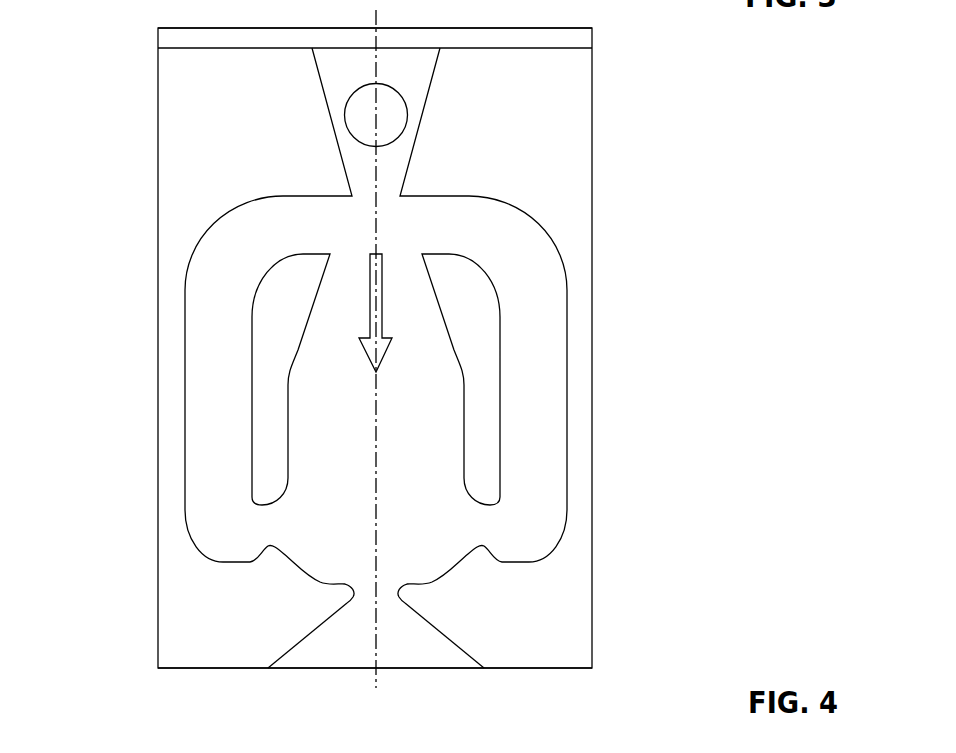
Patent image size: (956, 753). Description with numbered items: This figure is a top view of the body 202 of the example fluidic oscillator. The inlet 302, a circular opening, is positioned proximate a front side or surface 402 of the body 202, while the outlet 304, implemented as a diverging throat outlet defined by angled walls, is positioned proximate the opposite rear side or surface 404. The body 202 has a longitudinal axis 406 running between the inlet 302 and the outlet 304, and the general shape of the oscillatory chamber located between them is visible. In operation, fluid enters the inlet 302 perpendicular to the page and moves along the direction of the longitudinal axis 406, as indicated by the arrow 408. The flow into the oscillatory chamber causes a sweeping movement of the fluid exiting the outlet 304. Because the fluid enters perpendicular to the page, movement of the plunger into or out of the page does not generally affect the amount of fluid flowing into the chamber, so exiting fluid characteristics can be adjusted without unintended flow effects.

The body 202 is at (128, 64).
The inlet 302 is at (408, 116).
The outlet 304 is at (416, 627).
The front side or surface 402 is at (235, 28).
The rear side or surface 404 is at (233, 668).
The longitudinal axis 406 is at (376, 408).
The arrow 408 is at (383, 298).